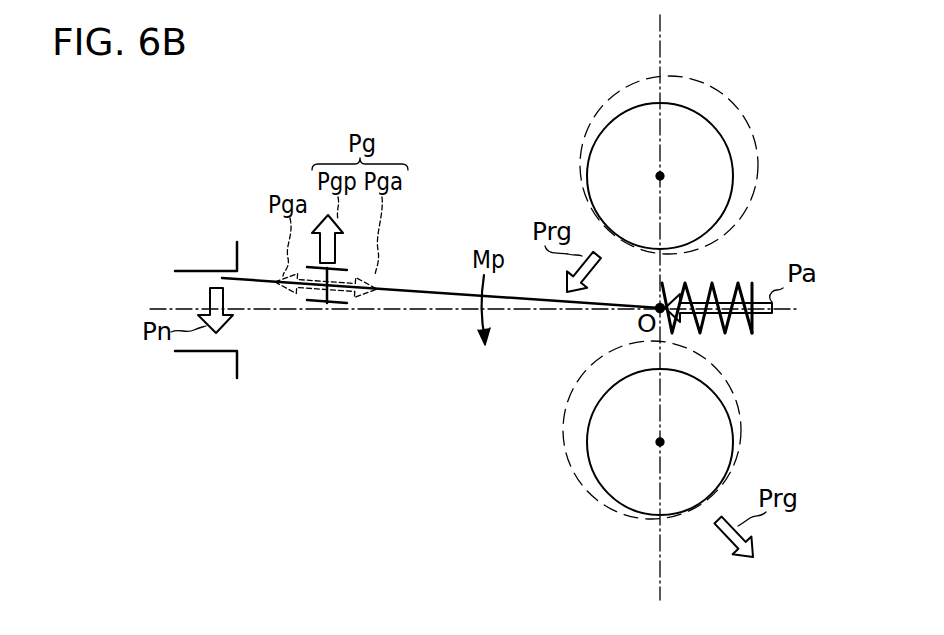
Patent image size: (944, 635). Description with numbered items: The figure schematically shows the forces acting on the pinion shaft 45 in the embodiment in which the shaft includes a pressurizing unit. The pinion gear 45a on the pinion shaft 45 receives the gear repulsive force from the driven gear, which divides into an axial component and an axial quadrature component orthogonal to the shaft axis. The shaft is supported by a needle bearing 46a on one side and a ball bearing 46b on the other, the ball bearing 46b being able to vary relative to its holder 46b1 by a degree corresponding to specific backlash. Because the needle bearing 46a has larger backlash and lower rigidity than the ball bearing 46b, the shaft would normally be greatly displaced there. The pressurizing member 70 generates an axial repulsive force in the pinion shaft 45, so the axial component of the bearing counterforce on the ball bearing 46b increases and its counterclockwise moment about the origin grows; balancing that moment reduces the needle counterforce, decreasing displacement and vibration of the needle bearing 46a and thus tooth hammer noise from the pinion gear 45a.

The pinion shaft 45 is at (430, 290).
The pinion gear 45a is at (328, 305).
The needle bearing 46a is at (246, 254).
The ball bearing 46b is at (733, 162).
The holder 46b1 is at (718, 90).
The pressurizing member 70 is at (736, 290).